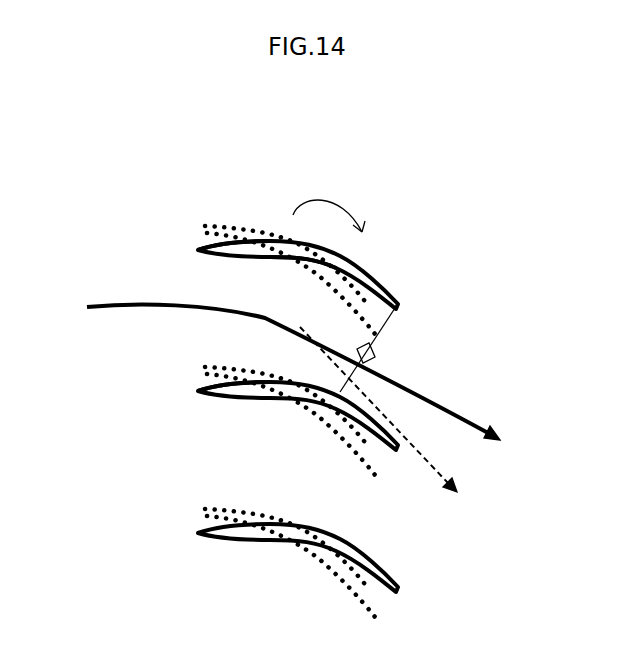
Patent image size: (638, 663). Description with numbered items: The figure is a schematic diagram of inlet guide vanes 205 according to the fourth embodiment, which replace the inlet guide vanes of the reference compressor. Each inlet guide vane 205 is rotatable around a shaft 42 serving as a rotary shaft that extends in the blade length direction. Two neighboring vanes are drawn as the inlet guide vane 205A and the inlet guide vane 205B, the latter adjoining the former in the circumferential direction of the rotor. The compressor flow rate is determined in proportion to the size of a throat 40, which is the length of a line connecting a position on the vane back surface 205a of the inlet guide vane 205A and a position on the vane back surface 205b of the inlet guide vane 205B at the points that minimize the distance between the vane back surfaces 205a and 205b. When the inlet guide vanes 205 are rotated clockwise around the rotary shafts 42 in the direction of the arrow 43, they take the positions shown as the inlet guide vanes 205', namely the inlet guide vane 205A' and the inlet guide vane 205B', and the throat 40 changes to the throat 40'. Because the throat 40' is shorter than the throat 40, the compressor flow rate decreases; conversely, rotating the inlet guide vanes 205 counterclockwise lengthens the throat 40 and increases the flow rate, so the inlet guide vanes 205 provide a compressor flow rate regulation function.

The inlet guide vanes 205 is at (298, 558).
The inlet guide vane 205A is at (225, 433).
The inlet guide vane 205B is at (372, 253).
The inlet guide vanes 205' is at (290, 563).
The inlet guide vane 205A' is at (357, 460).
The inlet guide vane 205B' is at (282, 221).
The vane back surface 205a is at (215, 388).
The vane back surface 205b is at (257, 250).
The throat 40 is at (295, 359).
The throat 40' is at (393, 409).
The shaft 42 is at (293, 262).
The arrow 43 is at (342, 214).